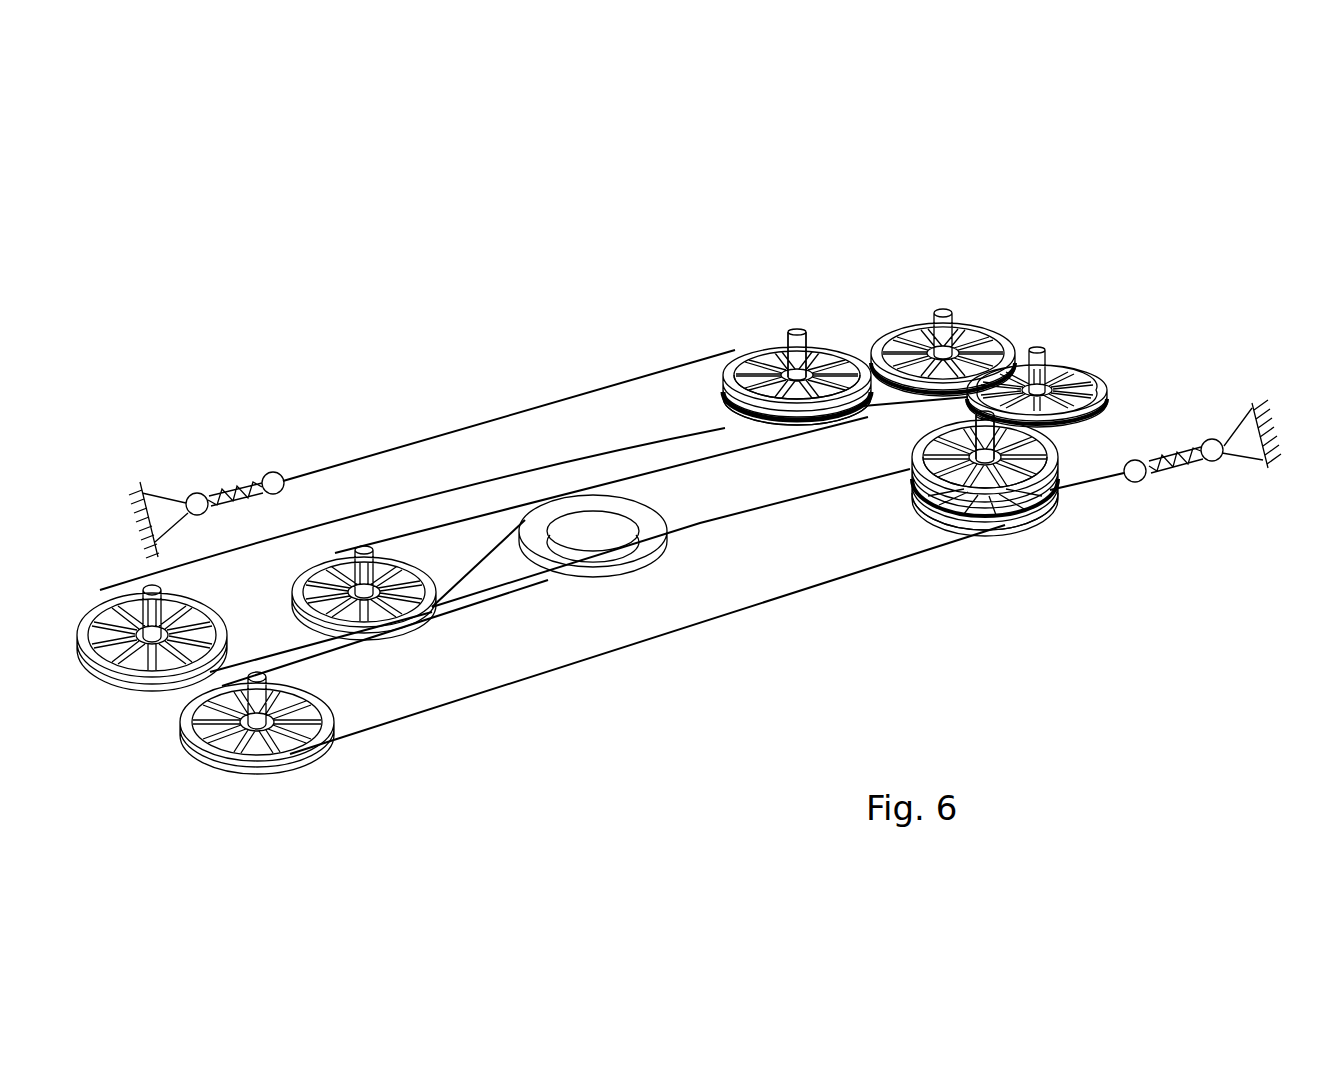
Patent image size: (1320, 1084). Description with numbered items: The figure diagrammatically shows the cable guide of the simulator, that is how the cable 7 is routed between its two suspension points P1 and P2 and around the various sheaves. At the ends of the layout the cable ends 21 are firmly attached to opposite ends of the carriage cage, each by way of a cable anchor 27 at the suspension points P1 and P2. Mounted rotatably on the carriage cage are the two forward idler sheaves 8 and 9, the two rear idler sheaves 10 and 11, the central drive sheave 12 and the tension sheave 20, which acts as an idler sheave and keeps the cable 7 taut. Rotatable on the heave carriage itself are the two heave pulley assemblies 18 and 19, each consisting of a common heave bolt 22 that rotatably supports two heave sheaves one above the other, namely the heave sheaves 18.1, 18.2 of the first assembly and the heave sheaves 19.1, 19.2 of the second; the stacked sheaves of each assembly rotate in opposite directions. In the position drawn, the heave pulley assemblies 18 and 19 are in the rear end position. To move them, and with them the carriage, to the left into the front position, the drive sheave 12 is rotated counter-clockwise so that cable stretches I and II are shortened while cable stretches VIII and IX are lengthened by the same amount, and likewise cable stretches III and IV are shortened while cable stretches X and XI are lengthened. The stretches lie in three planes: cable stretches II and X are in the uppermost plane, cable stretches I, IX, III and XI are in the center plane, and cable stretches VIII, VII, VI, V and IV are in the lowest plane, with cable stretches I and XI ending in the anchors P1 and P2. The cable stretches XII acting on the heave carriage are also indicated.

The cable 7 is at (667, 642).
The front idler sheave 8 is at (122, 660).
The front idler sheave 9 is at (220, 733).
The rear idler sheave 10 is at (970, 328).
The rear idler sheave 11 is at (1078, 368).
The drive sheave 12 is at (612, 568).
The heave pulley assembly 18 is at (733, 332).
The heave sheave 18.1 is at (775, 347).
The heave sheave 18.2 is at (723, 402).
The heave pulley assembly 19 is at (1013, 550).
The heave sheave 19.1 is at (945, 505).
The heave sheave 19.2 is at (982, 532).
The tension sheave 20 is at (408, 632).
The cable end 21 is at (273, 472).
The heave bolt 22 is at (799, 338).
The cable anchor 27 is at (197, 493).
The suspension point P1 is at (157, 472).
The suspension point P2 is at (1235, 490).
The cable stretch I is at (433, 420).
The cable stretch II is at (648, 452).
The cable stretch III is at (733, 522).
The cable stretch IV is at (780, 603).
The cable stretch V is at (477, 610).
The cable stretch VI is at (483, 565).
The cable stretch VII is at (687, 463).
The cable stretch VIII is at (860, 340).
The cable stretch IX is at (885, 407).
The cable stretch X is at (1008, 422).
The cable stretch XI is at (1077, 490).
The cable stretch XII is at (720, 400).